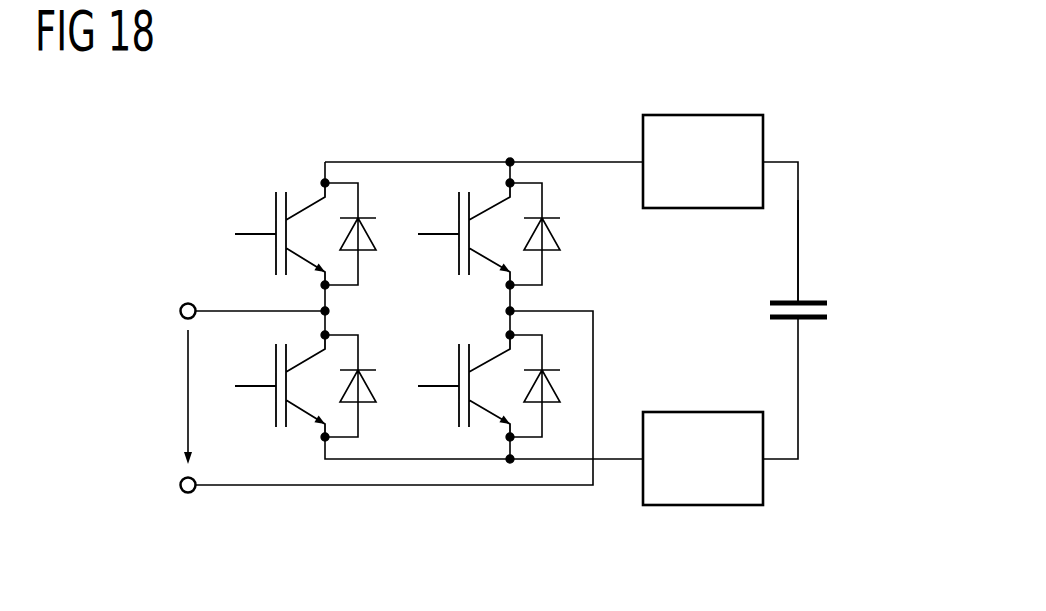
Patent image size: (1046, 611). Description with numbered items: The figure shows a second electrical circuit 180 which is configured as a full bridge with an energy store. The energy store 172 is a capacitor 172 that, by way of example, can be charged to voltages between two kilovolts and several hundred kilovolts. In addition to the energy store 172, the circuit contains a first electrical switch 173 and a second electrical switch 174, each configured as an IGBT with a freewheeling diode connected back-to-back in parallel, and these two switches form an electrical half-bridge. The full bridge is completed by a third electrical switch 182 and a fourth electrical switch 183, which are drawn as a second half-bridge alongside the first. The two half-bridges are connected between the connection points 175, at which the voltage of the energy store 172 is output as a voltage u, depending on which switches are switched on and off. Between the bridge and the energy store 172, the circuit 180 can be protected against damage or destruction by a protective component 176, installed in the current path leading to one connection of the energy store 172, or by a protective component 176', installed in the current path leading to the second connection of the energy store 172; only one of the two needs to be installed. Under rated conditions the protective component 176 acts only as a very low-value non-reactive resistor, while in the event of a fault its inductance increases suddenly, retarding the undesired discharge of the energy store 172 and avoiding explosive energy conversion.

The energy store 172 is at (813, 300).
The first electrical switch 173 is at (273, 210).
The second electrical switch 174 is at (273, 361).
The connection points 175 is at (180, 311).
The protective component 176 is at (703, 119).
The protective component 176' is at (703, 503).
The second electrical circuit 180 is at (796, 78).
The third electrical switch 182 is at (456, 210).
The fourth electrical switch 183 is at (456, 361).